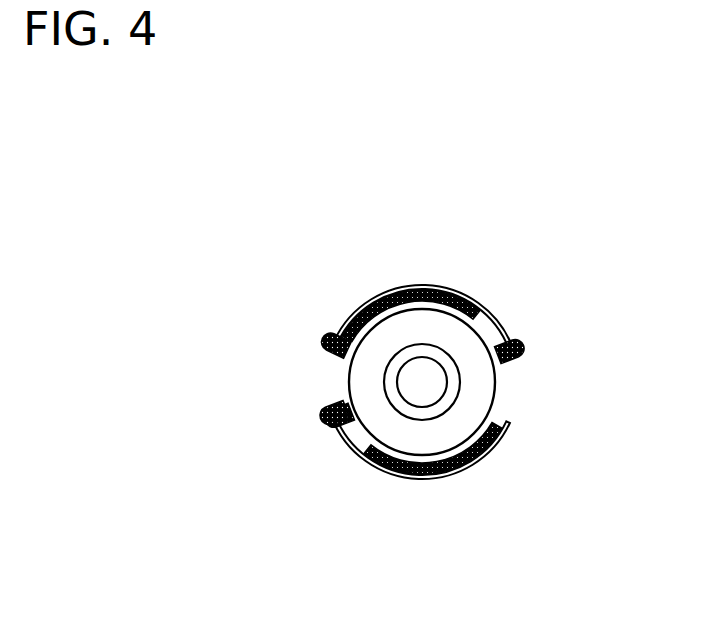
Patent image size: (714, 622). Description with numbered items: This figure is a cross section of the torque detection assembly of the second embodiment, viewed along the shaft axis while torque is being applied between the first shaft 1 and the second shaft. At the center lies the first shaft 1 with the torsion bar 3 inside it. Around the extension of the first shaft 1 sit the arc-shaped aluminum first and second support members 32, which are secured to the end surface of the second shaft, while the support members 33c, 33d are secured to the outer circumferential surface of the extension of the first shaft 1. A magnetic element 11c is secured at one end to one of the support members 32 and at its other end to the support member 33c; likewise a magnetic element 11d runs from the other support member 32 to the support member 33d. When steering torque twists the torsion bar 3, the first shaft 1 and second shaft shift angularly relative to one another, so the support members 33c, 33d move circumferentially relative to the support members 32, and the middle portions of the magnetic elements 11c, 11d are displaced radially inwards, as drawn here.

The first shaft 1 is at (358, 385).
The torsion bar 3 is at (435, 375).
The first and second support member 32 is at (357, 307).
The magnetic element 11c is at (352, 440).
The magnetic element 11d is at (387, 287).
The support member 33c is at (346, 423).
The support member 33d is at (503, 327).